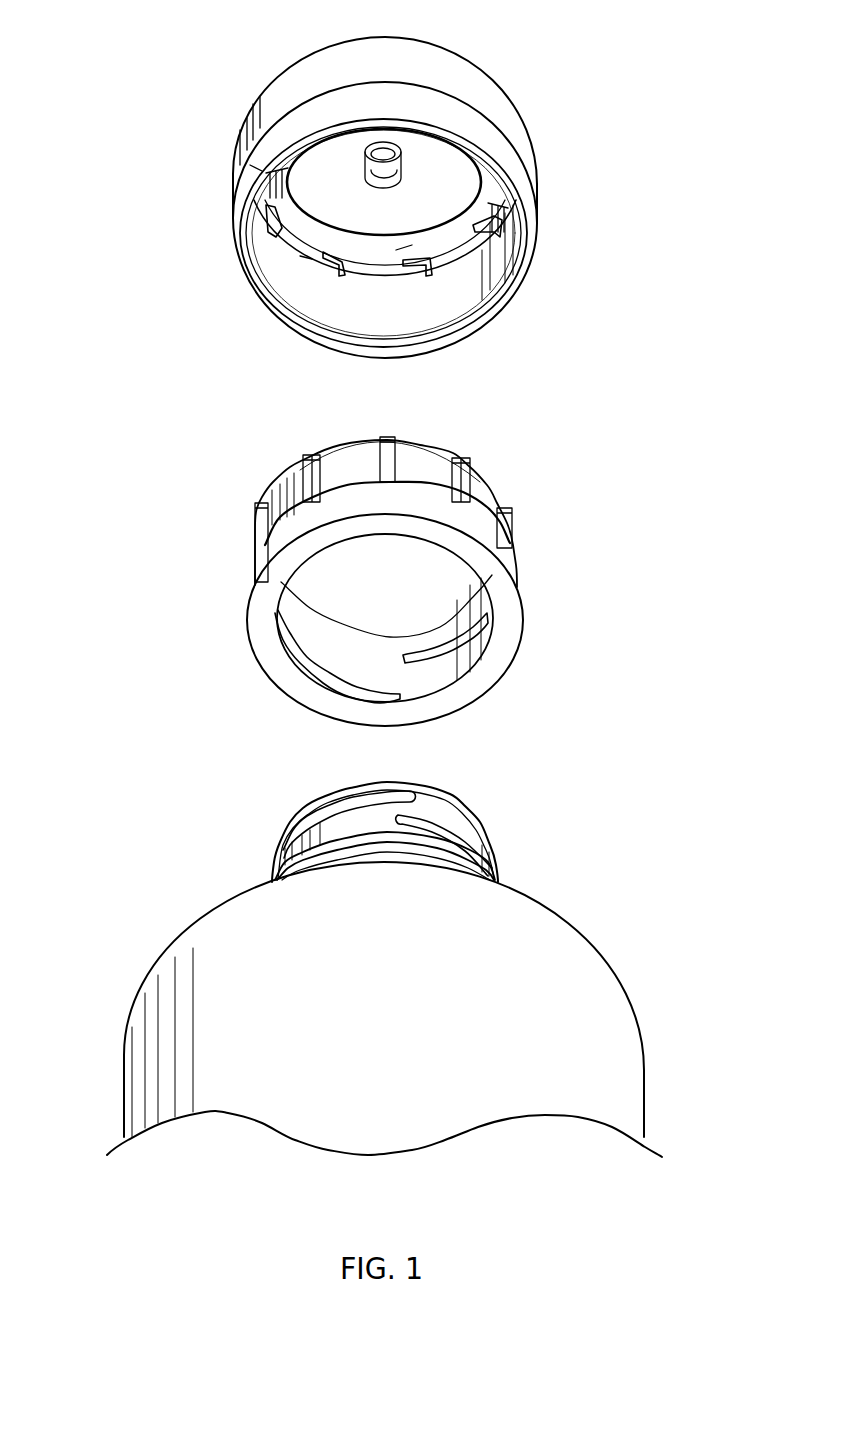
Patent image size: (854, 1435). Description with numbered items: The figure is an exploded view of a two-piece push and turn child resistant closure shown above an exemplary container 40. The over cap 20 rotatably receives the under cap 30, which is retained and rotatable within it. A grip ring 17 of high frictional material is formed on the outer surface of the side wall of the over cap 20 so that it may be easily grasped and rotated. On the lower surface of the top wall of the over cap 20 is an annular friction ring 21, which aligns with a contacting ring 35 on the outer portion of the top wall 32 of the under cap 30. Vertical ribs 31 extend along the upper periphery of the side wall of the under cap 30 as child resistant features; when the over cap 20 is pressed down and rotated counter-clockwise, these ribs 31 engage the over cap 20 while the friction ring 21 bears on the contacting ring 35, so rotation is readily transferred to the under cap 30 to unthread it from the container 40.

The over cap 20 is at (449, 182).
The grip ring 17 is at (522, 128).
The friction ring 21 is at (440, 230).
The under cap 30 is at (347, 550).
The vertical ribs 31 is at (513, 522).
The top wall 32 is at (438, 451).
The contacting ring 35 is at (340, 446).
The container 40 is at (598, 900).